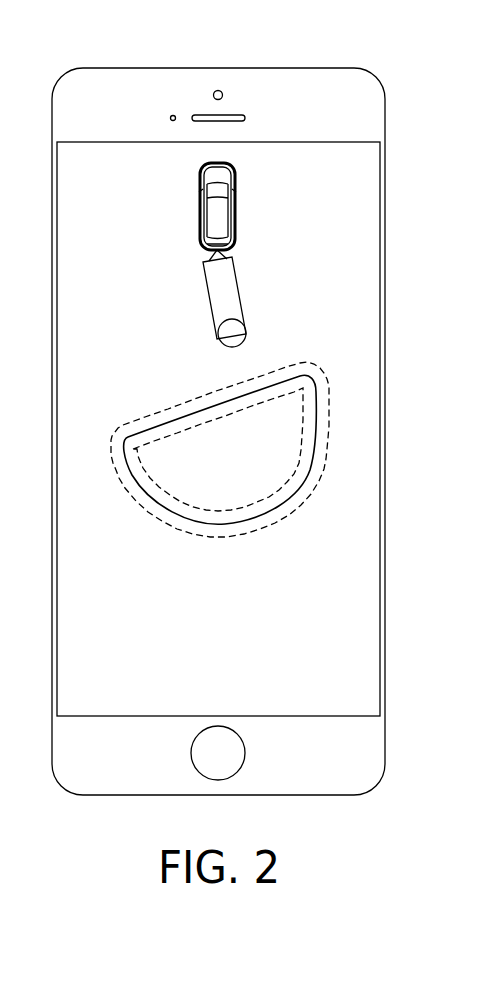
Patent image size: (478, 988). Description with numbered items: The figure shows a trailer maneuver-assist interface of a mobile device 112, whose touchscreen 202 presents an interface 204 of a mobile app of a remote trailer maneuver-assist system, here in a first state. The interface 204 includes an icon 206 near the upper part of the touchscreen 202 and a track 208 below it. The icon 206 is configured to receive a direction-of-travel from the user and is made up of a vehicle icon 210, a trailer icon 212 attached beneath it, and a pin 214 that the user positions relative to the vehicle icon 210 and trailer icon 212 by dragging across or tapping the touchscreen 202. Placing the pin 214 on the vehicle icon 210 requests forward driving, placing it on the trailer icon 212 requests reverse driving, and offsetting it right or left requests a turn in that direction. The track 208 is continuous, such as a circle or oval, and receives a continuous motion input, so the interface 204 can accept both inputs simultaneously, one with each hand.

The mobile device 112 is at (355, 67).
The touchscreen 202 is at (238, 692).
The interface 204 is at (335, 628).
The icon 206 is at (213, 250).
The track 208 is at (170, 412).
The vehicle icon 210 is at (236, 172).
The trailer icon 212 is at (208, 301).
The pin 214 is at (247, 339).